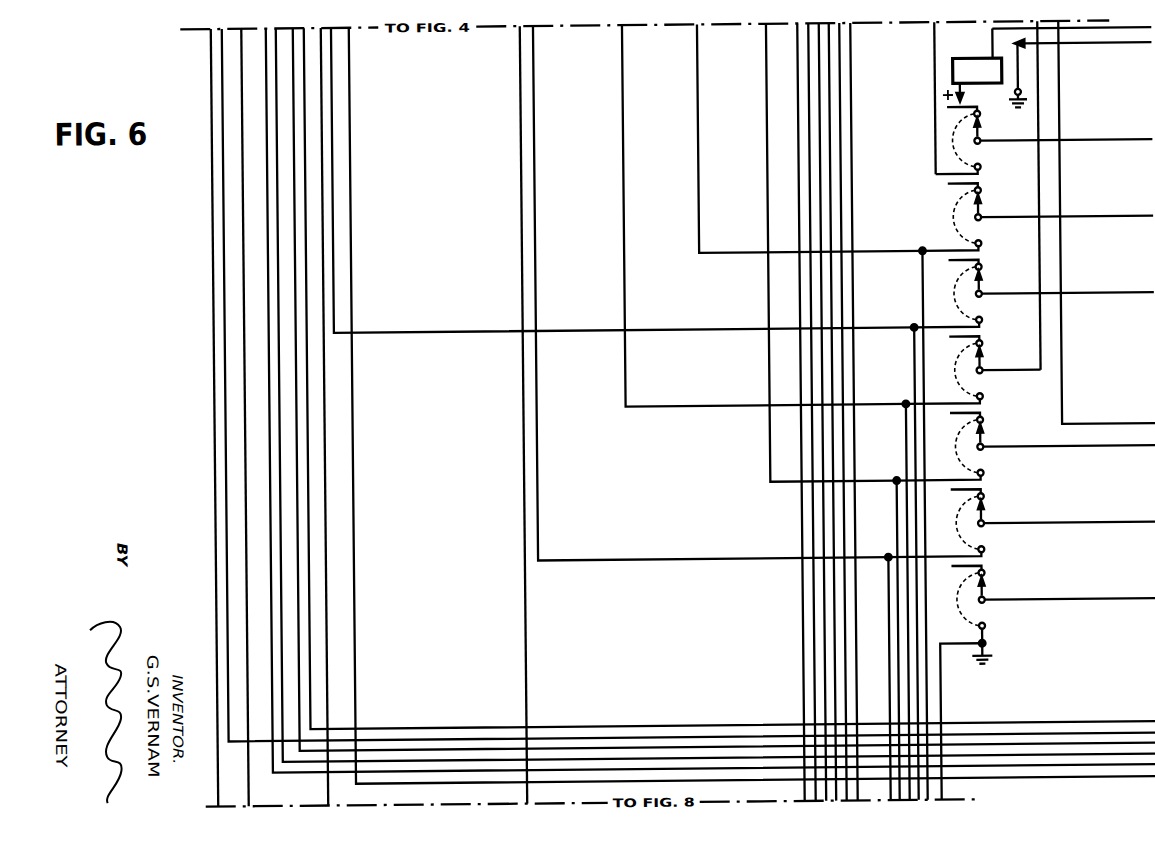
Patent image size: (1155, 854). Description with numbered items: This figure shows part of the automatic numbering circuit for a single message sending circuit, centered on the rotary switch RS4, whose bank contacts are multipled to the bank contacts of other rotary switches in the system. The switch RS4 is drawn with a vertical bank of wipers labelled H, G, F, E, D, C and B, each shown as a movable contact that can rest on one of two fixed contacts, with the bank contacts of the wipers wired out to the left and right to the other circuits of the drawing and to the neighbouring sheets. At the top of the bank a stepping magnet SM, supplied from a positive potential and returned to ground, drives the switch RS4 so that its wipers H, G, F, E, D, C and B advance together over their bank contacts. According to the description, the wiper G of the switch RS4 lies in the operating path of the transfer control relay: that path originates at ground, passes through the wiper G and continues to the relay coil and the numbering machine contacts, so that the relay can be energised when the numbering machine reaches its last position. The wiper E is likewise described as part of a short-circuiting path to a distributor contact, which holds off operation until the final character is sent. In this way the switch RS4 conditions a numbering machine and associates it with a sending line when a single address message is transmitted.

The stepping magnet SM is at (1047, 64).
The rotary switch RS4 is at (1002, 130).
The relay H is at (1044, 139).
The G wiper G is at (1038, 216).
The relay F is at (1034, 292).
The E wiper E is at (973, 370).
The relay D is at (1025, 445).
The relay C is at (1021, 523).
The relay B is at (1047, 682).